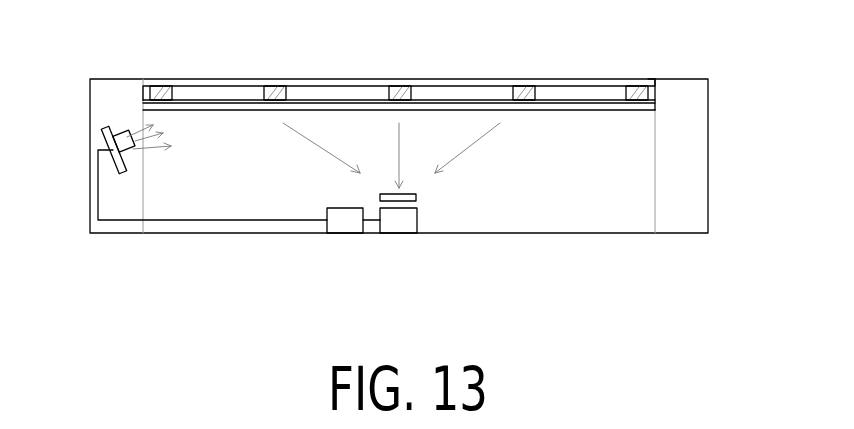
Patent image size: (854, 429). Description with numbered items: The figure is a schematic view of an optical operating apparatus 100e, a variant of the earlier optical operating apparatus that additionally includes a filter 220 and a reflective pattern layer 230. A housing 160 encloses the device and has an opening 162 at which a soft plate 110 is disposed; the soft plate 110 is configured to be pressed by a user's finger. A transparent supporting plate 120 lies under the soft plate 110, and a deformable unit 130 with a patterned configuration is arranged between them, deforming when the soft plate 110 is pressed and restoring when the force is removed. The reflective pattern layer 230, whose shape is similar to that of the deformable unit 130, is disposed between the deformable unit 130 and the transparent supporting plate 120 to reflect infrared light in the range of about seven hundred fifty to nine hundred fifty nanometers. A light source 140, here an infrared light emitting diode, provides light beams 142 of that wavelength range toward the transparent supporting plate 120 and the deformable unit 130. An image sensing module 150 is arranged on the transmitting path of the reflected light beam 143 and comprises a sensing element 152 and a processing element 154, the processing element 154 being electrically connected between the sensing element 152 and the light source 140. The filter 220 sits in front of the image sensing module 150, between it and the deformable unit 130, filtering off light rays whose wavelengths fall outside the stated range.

The optical operating apparatus 100e is at (710, 302).
The soft plate 110 is at (327, 82).
The transparent supporting plate 120 is at (650, 107).
The deformable unit 130 is at (640, 92).
The light source 140 is at (110, 128).
The light beams 142 is at (152, 146).
The reflected light beam 143 is at (400, 143).
The image sensing module 150 is at (371, 269).
The sensing element 152 is at (398, 248).
The processing element 154 is at (342, 228).
The housing 160 is at (708, 199).
The opening 162 is at (656, 69).
The filter 220 is at (413, 197).
The reflective pattern layer 230 is at (626, 100).